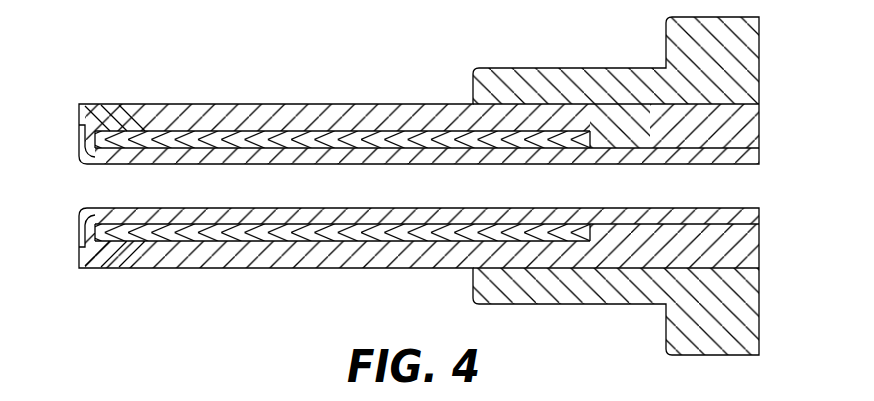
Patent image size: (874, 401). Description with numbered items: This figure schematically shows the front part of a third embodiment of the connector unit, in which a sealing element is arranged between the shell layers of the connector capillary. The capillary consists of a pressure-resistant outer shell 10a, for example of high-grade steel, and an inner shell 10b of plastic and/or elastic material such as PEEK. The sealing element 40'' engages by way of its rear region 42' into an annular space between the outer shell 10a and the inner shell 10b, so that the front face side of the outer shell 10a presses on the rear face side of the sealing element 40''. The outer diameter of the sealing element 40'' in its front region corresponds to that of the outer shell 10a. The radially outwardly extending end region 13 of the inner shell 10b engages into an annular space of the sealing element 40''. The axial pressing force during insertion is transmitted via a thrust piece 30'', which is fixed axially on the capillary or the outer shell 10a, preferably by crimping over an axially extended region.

The outer shell 10a is at (752, 133).
The inner shell 10b is at (752, 220).
The end region 13 is at (92, 215).
The thrust piece 30'' is at (569, 66).
The sealing element 40'' is at (337, 104).
The rear region of the sealing element 42' is at (342, 108).